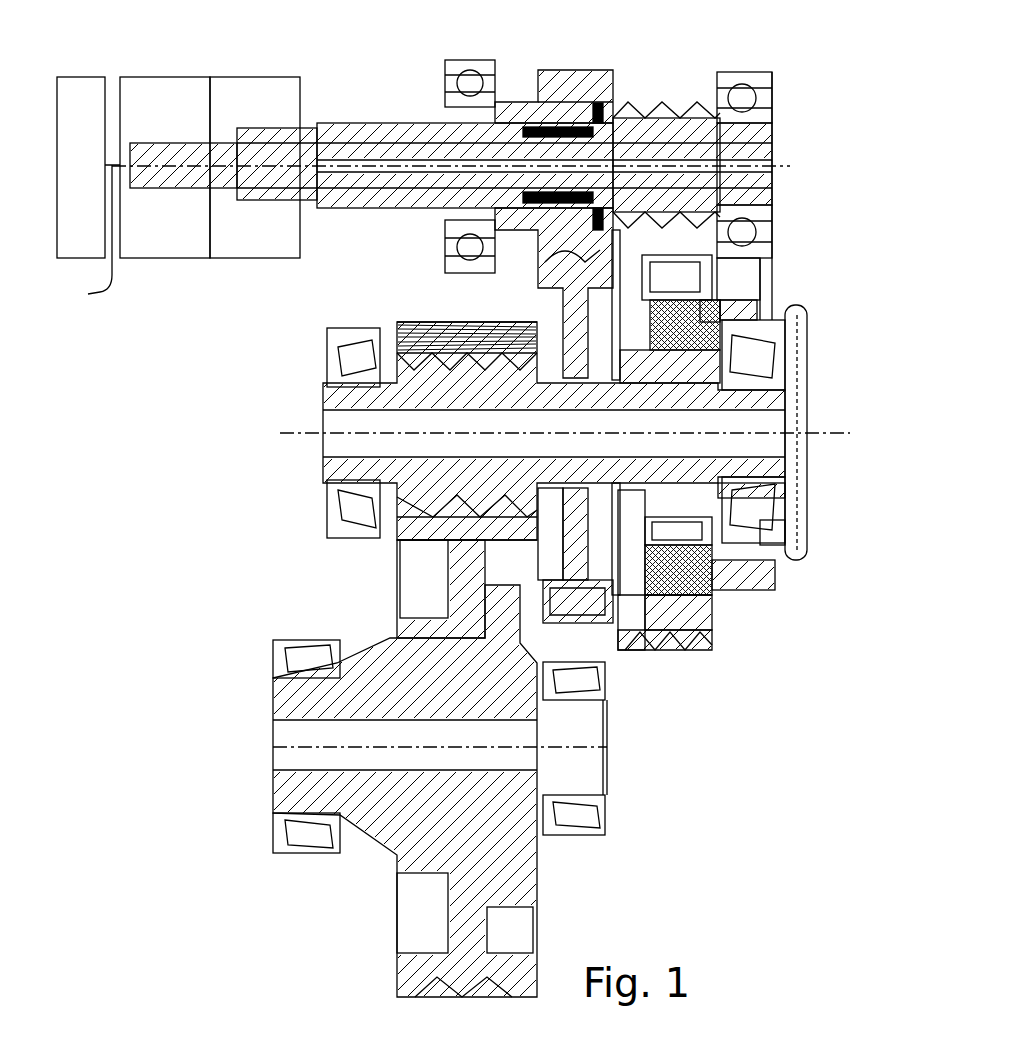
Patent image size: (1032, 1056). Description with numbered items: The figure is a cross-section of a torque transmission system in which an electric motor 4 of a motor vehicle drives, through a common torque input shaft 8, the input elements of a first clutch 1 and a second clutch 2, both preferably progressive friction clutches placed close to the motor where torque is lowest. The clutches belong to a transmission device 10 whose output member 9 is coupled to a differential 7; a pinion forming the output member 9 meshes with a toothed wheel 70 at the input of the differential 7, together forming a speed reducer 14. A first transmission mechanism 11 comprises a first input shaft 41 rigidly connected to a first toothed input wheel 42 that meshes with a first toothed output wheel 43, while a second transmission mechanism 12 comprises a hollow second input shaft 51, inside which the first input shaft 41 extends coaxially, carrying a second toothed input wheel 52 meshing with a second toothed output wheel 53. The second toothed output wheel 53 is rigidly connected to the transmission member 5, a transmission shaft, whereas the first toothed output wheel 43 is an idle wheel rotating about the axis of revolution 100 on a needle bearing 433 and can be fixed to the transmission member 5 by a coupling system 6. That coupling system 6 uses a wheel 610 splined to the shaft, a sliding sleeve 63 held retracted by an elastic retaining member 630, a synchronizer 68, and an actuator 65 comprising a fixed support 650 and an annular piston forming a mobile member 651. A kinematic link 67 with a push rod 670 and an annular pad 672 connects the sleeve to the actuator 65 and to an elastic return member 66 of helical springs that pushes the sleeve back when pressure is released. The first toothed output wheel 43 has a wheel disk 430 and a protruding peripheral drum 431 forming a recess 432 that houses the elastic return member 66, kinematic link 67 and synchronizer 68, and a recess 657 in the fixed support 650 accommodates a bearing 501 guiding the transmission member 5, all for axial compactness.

The first clutch 1 is at (173, 100).
The second clutch 2 is at (255, 100).
The electric motor 4 is at (87, 100).
The common torque input shaft 8 is at (92, 238).
The second input shaft 51 is at (385, 122).
The second toothed input wheel 52 is at (560, 80).
The second transmission mechanism 12 is at (613, 36).
The first transmission mechanism 11 is at (713, 36).
The first toothed input wheel 42 is at (700, 83).
The first input shaft 41 is at (772, 140).
The kinematic link 67 is at (673, 288).
The push rod 670 is at (717, 270).
The annular pad 672 is at (700, 310).
The fixed support 650 is at (772, 272).
The mobile member 651 is at (737, 303).
The elastic retaining member 630 is at (745, 345).
The wheel 610 is at (737, 370).
The second toothed output wheel 53 is at (560, 273).
The needle bearing 433 is at (612, 382).
The transmission member 5 is at (350, 395).
The axis of revolution 100 is at (290, 433).
The transmission device 10 is at (148, 438).
The speed reducer 14 is at (200, 545).
The output member 9 is at (430, 503).
The toothed wheel 70 is at (455, 563).
The bearing 501 is at (770, 497).
The elastic return member 66 is at (670, 553).
The recess 657 is at (770, 538).
The coupling system 6 is at (805, 578).
The actuator 65 is at (735, 575).
The sliding sleeve 63 is at (668, 562).
The recess 432 is at (683, 600).
The wheel disk 430 is at (633, 585).
The peripheral drum 431 is at (680, 632).
The first toothed output wheel 43 is at (748, 767).
The differential 7 is at (380, 830).
The synchronizer 68 is at (637, 537).